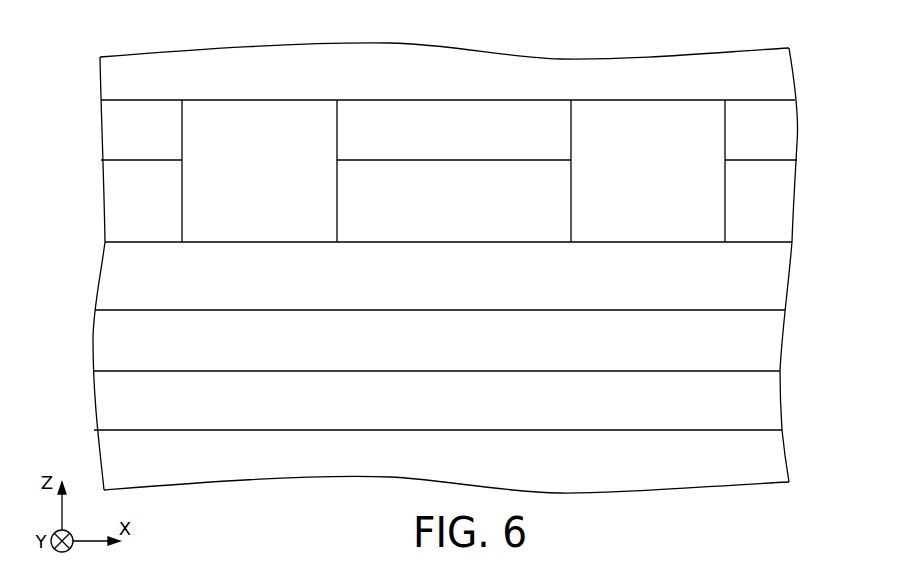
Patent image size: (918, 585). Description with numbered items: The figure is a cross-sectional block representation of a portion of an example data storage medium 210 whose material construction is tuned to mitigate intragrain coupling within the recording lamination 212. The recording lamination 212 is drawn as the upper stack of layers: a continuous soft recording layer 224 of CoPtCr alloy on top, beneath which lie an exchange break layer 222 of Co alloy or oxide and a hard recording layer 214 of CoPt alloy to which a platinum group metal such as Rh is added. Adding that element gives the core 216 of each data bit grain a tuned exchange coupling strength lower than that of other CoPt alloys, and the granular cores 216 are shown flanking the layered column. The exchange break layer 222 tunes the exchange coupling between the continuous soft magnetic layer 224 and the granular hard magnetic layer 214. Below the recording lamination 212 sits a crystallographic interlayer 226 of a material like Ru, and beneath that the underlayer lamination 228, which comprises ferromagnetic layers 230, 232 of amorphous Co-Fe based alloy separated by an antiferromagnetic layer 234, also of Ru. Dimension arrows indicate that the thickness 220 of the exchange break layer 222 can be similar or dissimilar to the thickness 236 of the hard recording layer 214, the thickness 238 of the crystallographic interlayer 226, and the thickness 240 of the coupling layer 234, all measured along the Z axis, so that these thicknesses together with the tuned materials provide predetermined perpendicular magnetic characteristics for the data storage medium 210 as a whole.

The data storage medium 210 is at (802, 39).
The recording lamination 212 is at (798, 240).
The hard recording layer 214 is at (743, 211).
The core 216 is at (277, 181).
The thickness of the exchange break layer 220 is at (164, 112).
The exchange break layer 222 is at (743, 140).
The continuous soft recording layer 224 is at (773, 88).
The crystallographic interlayer 226 is at (740, 286).
The underlayer lamination 228 is at (799, 310).
The ferromagnetic layer 230 is at (740, 350).
The ferromagnetic layer 232 is at (740, 470).
The antiferromagnetic layer 234 is at (740, 408).
The thickness of the hard recording layer 236 is at (164, 172).
The thickness of the crystallographic interlayer 238 is at (253, 254).
The thickness of the coupling layer 240 is at (253, 383).